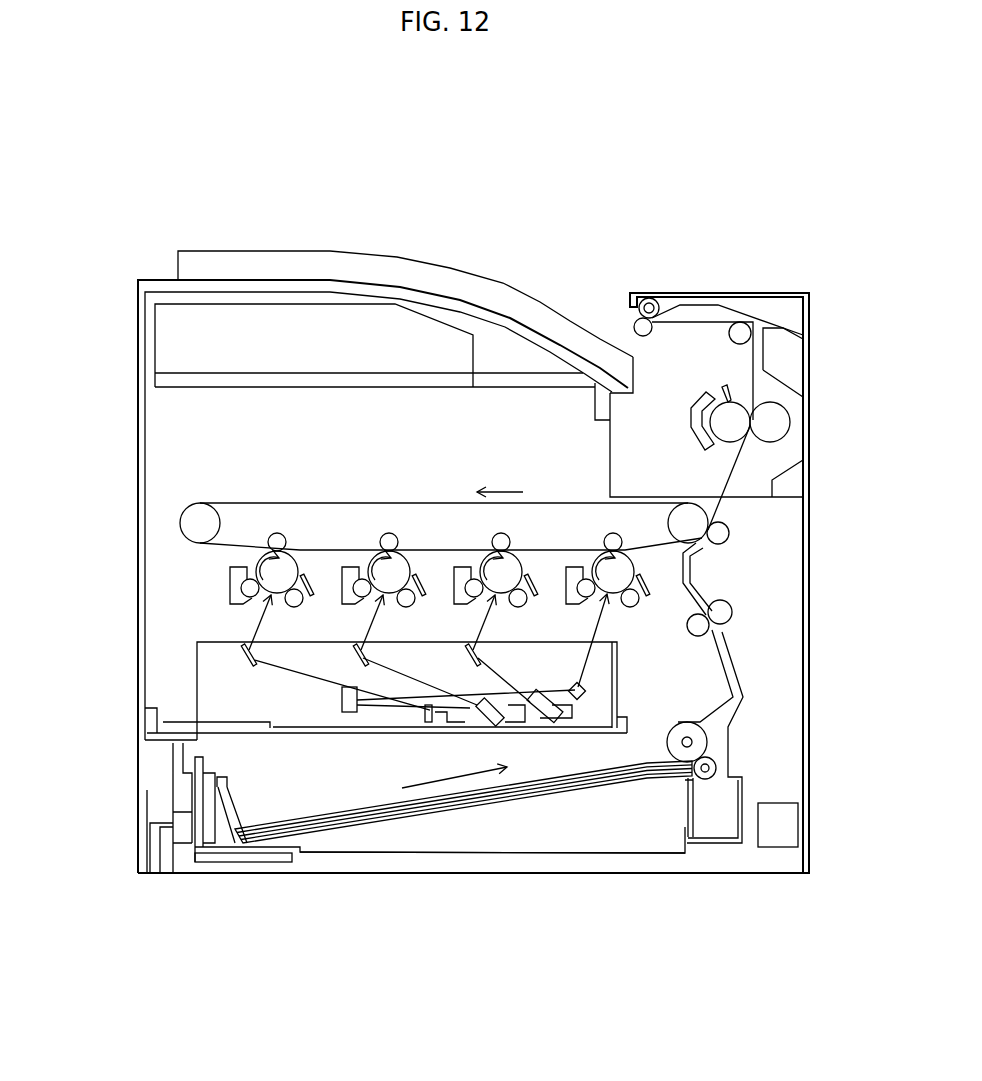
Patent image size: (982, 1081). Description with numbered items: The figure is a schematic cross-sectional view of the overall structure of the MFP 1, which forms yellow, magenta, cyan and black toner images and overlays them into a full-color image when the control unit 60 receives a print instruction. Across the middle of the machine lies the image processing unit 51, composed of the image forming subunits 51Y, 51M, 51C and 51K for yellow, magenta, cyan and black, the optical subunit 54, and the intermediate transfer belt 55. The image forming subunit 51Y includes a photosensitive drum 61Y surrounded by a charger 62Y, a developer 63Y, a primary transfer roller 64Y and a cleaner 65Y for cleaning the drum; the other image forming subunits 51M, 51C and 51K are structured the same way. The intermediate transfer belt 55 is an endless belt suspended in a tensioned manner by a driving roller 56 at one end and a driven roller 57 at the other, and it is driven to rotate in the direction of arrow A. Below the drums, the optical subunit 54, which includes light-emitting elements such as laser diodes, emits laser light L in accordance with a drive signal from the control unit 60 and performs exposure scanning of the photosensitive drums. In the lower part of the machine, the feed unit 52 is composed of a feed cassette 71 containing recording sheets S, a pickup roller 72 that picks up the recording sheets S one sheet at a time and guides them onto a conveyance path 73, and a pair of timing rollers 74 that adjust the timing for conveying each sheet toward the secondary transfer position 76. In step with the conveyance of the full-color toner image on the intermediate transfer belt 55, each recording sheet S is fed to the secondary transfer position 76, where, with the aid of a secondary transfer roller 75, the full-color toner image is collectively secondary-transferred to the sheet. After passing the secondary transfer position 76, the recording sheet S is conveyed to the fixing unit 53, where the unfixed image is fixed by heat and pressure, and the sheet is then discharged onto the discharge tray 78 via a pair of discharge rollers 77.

The MFP 1 is at (459, 159).
The discharge tray 78 is at (522, 290).
The pair of discharge rollers 77 is at (645, 298).
The fixing unit 53 is at (781, 362).
The driven roller 57 is at (185, 511).
The intermediate transfer belt 55 is at (233, 552).
The driving roller 56 is at (670, 520).
The secondary transfer roller 75 is at (727, 535).
The secondary transfer position 76 is at (718, 541).
The pair of timing rollers 74 is at (728, 615).
The direction of arrow A is at (500, 480).
The image processing unit 51 is at (161, 611).
The image forming subunit 51Y is at (257, 543).
The image forming subunit 51M is at (370, 543).
The image forming subunit 51C is at (480, 543).
The image forming subunit 51K is at (592, 543).
The photosensitive drum 61Y is at (292, 552).
The primary transfer roller 64Y is at (277, 533).
The developer 63Y is at (227, 587).
The charger 62Y is at (295, 607).
The cleaner 65Y is at (315, 590).
The optical subunit 54 is at (197, 662).
The laser light L is at (298, 673).
The pickup roller 72 is at (685, 735).
The conveyance path 73 is at (715, 745).
The control unit 60 is at (790, 803).
The feed unit 52 is at (128, 802).
The recording sheets S is at (317, 815).
The feed cassette 71 is at (423, 833).